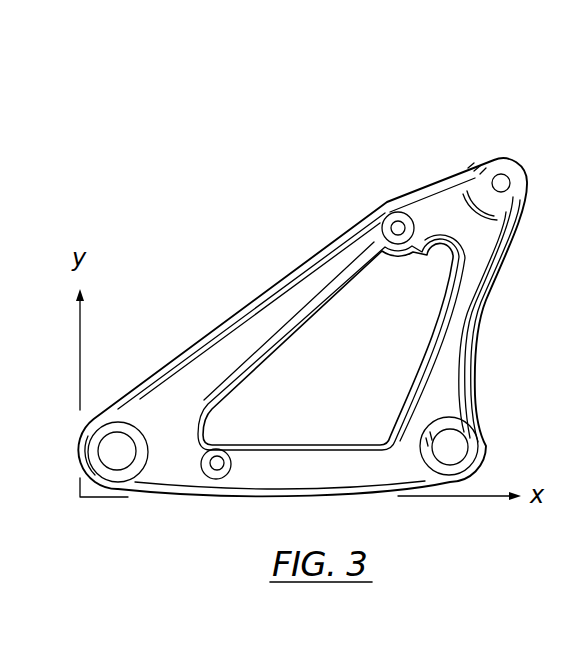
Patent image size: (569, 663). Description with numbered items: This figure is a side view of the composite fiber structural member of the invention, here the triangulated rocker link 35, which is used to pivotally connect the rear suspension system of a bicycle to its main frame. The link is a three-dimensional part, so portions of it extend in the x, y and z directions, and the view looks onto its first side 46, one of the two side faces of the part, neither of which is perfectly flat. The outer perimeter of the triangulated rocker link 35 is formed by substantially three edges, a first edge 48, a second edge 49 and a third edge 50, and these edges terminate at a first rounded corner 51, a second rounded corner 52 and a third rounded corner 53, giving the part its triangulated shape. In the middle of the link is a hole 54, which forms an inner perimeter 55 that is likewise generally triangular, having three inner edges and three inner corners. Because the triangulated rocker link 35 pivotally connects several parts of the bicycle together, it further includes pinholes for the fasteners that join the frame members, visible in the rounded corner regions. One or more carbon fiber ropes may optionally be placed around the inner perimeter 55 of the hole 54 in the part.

The triangulated rocker link 35 is at (258, 244).
The first side 46 is at (446, 389).
The first edge 48 is at (262, 497).
The second edge 49 is at (478, 338).
The third edge 50 is at (221, 324).
The first rounded corner 51 is at (91, 415).
The second rounded corner 52 is at (483, 466).
The third rounded corner 53 is at (520, 158).
The hole 54 is at (372, 375).
The inner perimeter 55 is at (357, 294).